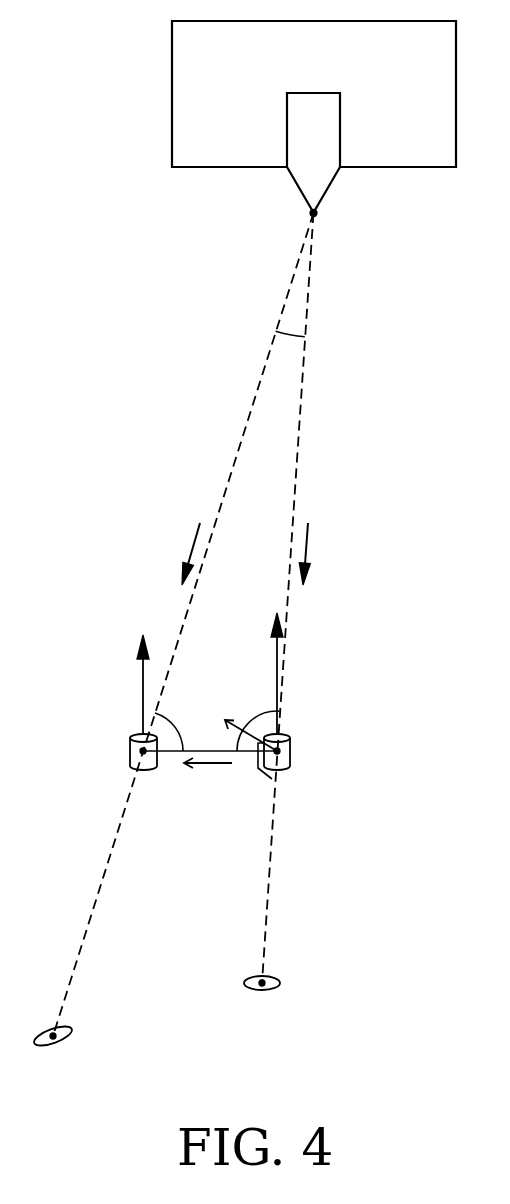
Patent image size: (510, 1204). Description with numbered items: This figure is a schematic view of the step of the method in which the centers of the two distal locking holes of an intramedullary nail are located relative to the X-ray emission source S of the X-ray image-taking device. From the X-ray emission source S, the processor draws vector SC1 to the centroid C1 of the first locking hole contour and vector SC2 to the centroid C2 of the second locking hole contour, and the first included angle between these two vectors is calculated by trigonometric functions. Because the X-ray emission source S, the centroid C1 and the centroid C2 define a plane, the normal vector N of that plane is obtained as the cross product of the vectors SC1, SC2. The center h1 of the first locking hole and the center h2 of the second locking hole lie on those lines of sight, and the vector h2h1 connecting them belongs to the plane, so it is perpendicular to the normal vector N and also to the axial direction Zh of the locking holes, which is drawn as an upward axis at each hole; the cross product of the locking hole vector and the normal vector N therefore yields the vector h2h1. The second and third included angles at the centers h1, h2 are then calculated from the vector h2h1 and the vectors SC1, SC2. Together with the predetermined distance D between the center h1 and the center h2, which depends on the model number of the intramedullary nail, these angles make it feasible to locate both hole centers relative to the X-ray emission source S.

The X-ray emission source S is at (314, 124).
The vector SC1 is at (179, 532).
The vector SC2 is at (355, 537).
The axial direction Zh is at (193, 671).
The distance D is at (210, 738).
The normal vector N is at (232, 695).
The vector h2h1 is at (225, 785).
The center of first locking hole h1 is at (130, 751).
The center of second locking hole h2 is at (290, 751).
The centroid of first locking hole contour C1 is at (57, 1048).
The centroid of second locking hole contour C2 is at (260, 997).